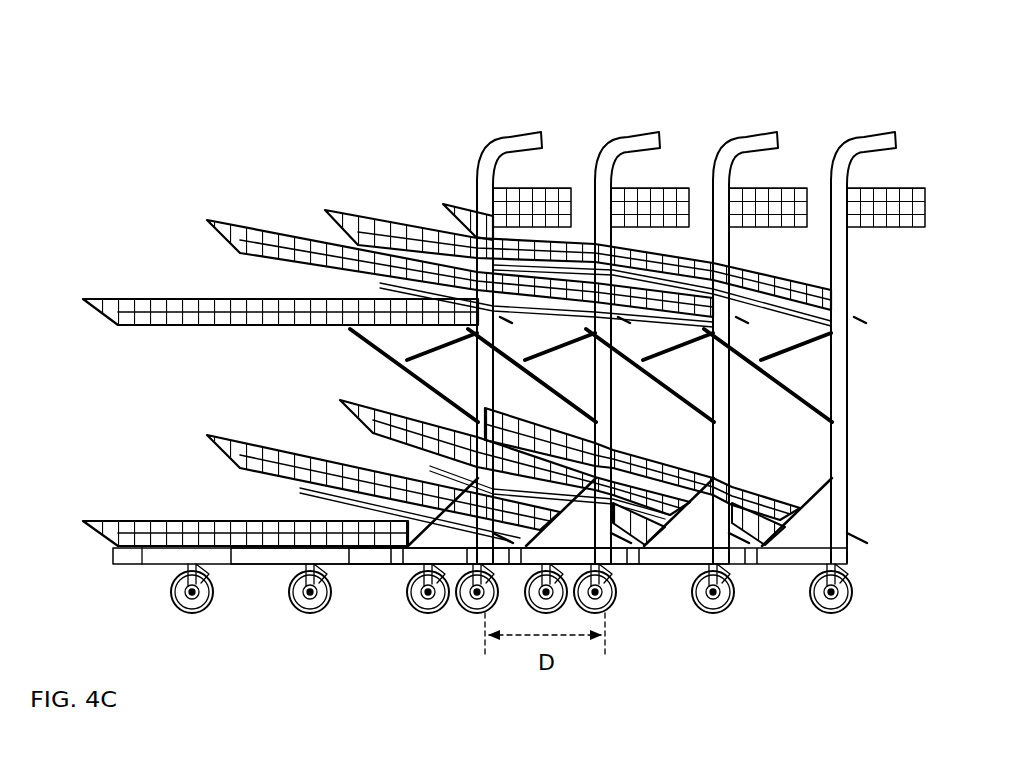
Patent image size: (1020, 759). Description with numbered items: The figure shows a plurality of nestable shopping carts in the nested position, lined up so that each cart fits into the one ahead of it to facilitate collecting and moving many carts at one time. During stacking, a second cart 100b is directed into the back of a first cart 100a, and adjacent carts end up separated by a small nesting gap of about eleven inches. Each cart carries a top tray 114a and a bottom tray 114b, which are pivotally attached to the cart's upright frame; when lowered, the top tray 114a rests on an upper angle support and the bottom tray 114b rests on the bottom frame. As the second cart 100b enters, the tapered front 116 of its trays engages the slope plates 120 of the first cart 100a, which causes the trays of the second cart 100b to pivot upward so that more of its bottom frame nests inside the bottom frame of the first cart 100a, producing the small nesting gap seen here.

The first cart 100a is at (538, 128).
The second cart 100b is at (648, 123).
The top tray 114a is at (95, 297).
The bottom tray 114b is at (95, 519).
The tapered front 116 is at (205, 216).
The slope plates 120 is at (518, 332).